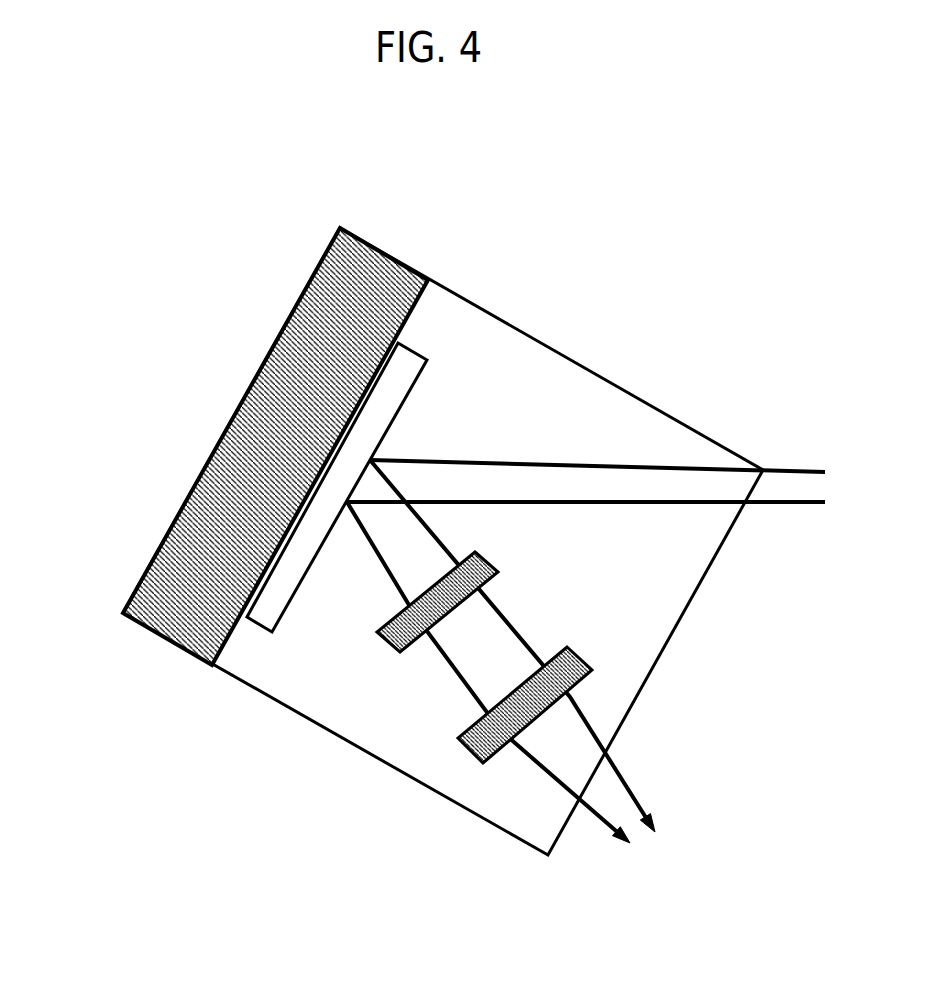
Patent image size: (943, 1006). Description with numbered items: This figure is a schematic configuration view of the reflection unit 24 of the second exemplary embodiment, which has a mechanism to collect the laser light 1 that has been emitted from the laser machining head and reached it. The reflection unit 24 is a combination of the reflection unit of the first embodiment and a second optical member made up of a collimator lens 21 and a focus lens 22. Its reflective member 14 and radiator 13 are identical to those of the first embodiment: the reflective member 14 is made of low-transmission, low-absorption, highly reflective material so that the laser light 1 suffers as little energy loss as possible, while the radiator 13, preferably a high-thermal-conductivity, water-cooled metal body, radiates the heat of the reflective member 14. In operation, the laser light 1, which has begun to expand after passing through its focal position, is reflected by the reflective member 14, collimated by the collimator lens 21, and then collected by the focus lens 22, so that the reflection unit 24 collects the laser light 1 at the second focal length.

The laser light 1 is at (607, 492).
The radiator 13 is at (280, 409).
The reflective member 14 is at (365, 383).
The collimator lens 21 is at (393, 640).
The focus lens 22 is at (473, 735).
The reflection unit 24 is at (215, 854).